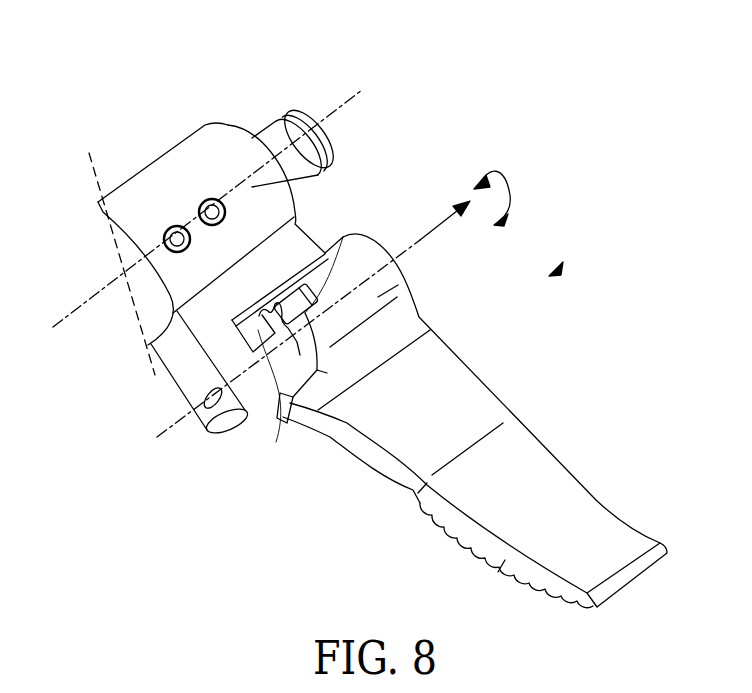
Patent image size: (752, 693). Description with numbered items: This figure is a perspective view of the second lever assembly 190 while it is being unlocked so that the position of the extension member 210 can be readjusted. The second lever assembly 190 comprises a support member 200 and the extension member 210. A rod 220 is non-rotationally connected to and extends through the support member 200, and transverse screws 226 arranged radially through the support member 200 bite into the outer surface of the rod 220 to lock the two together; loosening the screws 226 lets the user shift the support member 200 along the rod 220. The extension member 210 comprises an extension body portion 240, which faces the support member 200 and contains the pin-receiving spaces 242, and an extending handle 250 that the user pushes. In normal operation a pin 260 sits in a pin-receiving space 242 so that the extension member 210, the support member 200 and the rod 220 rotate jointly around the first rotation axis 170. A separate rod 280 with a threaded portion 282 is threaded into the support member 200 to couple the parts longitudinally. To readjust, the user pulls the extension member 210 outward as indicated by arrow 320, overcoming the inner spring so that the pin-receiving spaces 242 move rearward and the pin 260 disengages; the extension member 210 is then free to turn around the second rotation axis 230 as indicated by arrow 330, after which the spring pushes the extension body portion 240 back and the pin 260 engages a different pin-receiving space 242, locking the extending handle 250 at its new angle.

The first rotation axis 170 is at (350, 97).
The second lever assembly 190 is at (556, 272).
The support member 200 is at (193, 147).
The extension member 210 is at (490, 396).
The rod 220 is at (270, 137).
The transverse screws 226 is at (200, 199).
The second rotation axis 230 is at (173, 423).
The extension body portion 240 is at (402, 286).
The pin-receiving spaces 242 is at (306, 290).
The extending handle 250 is at (577, 502).
The pin 260 is at (245, 328).
The rod 280 is at (276, 442).
The threaded portion 282 is at (207, 410).
The arrow 320 is at (440, 215).
The arrow 330 is at (505, 193).